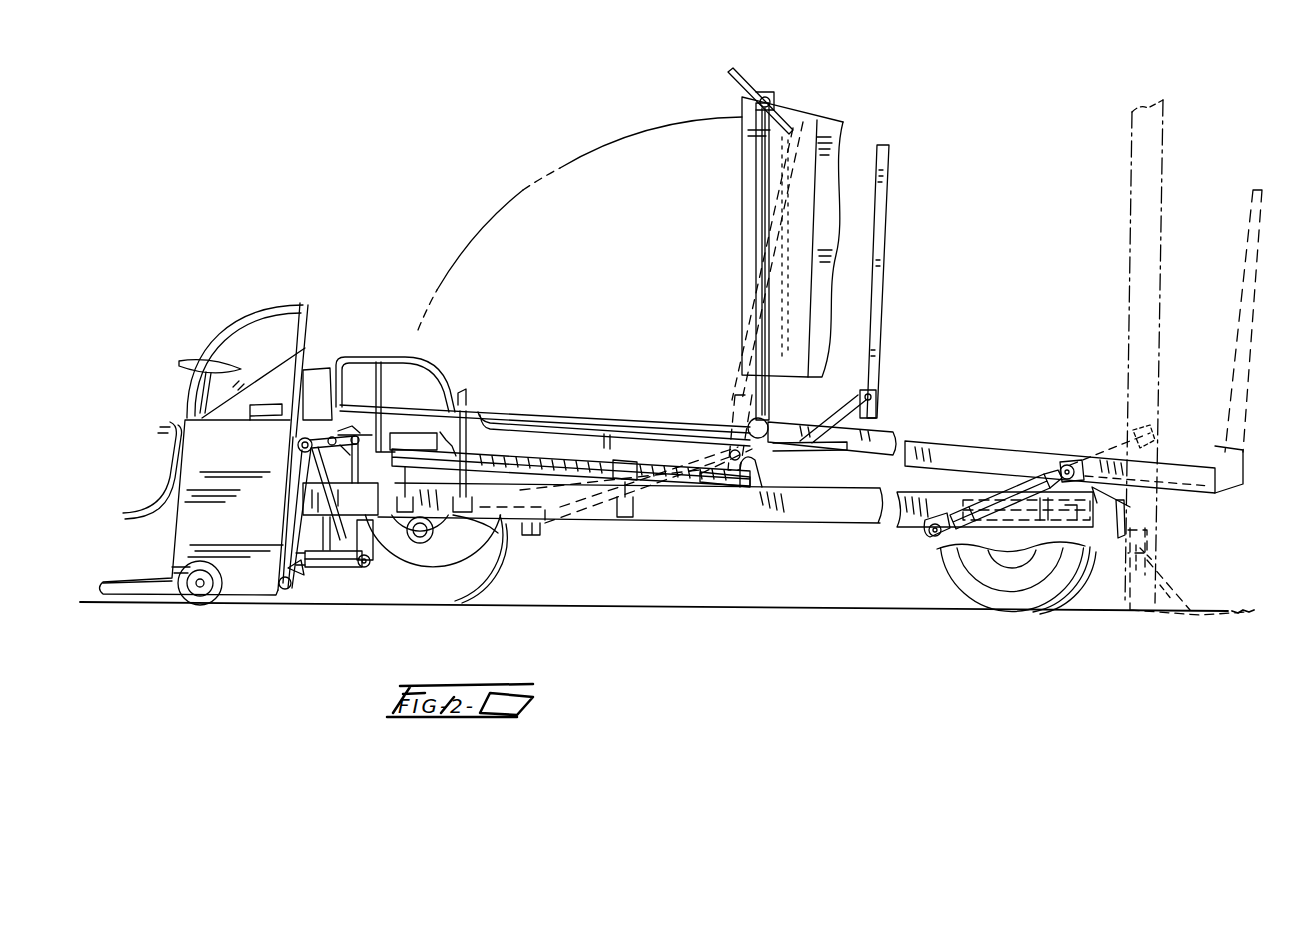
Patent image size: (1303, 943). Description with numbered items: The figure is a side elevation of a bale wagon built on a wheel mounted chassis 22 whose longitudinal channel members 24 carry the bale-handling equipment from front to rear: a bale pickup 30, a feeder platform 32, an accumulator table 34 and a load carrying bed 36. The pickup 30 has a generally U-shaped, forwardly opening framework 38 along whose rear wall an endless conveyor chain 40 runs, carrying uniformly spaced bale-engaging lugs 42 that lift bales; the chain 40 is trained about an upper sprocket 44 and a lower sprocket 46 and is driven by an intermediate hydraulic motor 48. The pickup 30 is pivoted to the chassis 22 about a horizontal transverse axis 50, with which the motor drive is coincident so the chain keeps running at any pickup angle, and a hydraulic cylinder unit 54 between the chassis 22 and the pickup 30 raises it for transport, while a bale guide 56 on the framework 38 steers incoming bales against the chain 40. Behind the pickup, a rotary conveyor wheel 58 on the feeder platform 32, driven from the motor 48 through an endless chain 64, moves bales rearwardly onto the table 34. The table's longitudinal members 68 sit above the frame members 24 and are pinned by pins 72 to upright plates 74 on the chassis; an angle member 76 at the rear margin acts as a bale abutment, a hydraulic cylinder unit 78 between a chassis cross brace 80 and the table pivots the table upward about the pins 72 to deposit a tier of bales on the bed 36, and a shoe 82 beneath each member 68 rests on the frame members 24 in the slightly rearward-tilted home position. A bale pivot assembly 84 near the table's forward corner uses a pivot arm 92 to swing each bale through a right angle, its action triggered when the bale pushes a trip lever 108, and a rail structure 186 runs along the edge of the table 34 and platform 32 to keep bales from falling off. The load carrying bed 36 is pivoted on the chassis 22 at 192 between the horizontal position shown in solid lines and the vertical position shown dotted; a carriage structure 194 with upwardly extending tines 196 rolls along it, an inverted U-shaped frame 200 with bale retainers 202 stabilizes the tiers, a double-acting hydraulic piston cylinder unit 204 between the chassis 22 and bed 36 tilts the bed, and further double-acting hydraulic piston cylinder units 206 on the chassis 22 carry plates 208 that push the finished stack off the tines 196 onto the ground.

The wheel mounted chassis 22 is at (875, 533).
The longitudinal channel member 24 is at (786, 508).
The bale pickup 30 is at (159, 539).
The feeder platform 32 is at (369, 422).
The accumulator table 34 is at (594, 435).
The load carrying bed 36 is at (1120, 250).
The framework 38 is at (221, 522).
The endless conveyor chain 40 is at (297, 527).
The bale-engaging lug 42 is at (310, 592).
The upper sprocket 44 is at (298, 468).
The lower sprocket 46 is at (280, 572).
The hydraulic motor 48 is at (311, 440).
The horizontal transverse axis 50 is at (298, 448).
The hydraulic cylinder unit 54 is at (352, 566).
The bale guide 56 is at (252, 325).
The rotary conveyor wheel 58 is at (312, 350).
The endless chain 64 is at (340, 521).
The longitudinal member 68 is at (707, 482).
The pin 72 is at (756, 438).
The upright plate 74 is at (763, 478).
The angle member 76 is at (732, 450).
The hydraulic cylinder unit 78 is at (608, 525).
The cross brace 80 is at (535, 537).
The shoe 82 is at (510, 490).
The bale pivot assembly 84 is at (478, 410).
The pivot arm 92 is at (350, 447).
The trip lever 108 is at (456, 393).
The rail structure 186 is at (418, 372).
The pivot 192 is at (1097, 500).
The carriage structure 194 is at (888, 389).
The tine 196 is at (886, 290).
The inverted U-shaped frame 200 is at (756, 185).
The bale retainer 202 is at (752, 88).
The double-acting hydraulic piston cylinder unit 204 is at (1008, 492).
The double-acting hydraulic piston cylinder unit 206 is at (1088, 568).
The plate 208 is at (1130, 507).